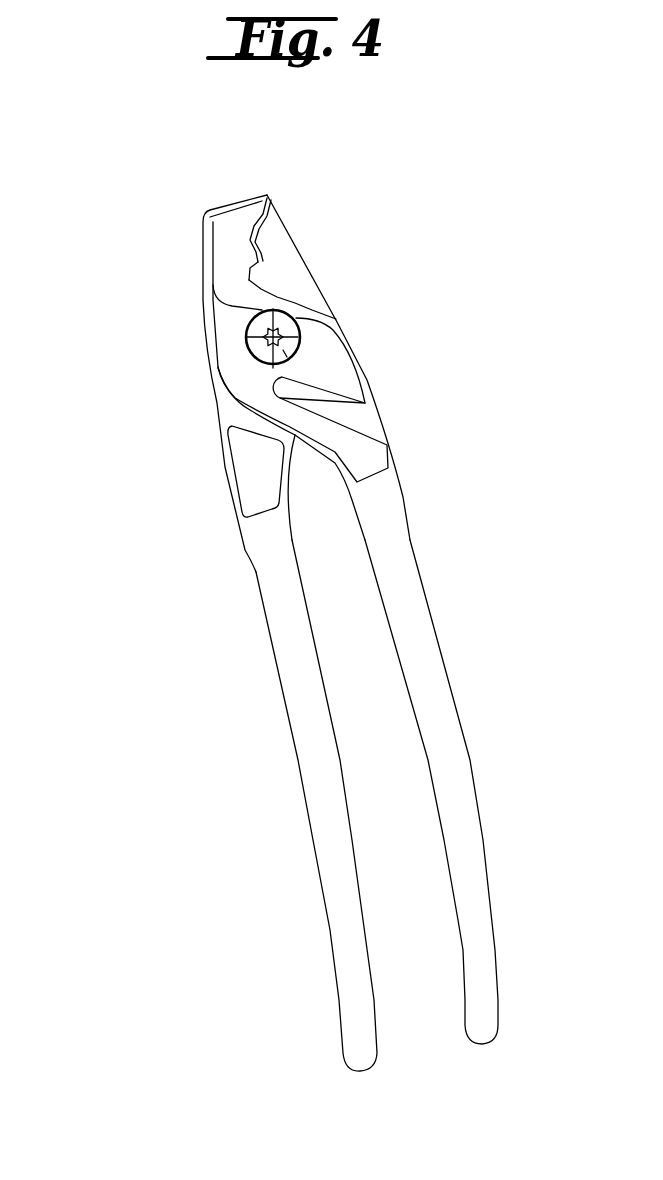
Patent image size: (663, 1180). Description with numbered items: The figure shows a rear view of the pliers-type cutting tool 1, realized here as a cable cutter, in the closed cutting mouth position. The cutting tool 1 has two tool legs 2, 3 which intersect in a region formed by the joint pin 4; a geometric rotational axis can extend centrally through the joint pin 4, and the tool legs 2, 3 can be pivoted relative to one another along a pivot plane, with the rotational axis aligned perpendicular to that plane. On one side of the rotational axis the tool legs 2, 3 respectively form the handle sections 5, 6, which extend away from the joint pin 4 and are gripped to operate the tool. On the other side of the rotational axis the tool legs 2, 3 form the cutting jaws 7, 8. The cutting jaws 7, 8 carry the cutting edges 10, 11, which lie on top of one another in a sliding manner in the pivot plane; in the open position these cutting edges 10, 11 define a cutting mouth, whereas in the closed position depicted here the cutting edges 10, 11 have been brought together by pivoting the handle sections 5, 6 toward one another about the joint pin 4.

The pliers-type cutting tool 1 is at (100, 224).
The tool leg 2 is at (274, 657).
The tool leg 3 is at (426, 564).
The joint pin 4 is at (258, 350).
The handle section 5 is at (352, 910).
The handle section 6 is at (458, 865).
The cutting jaw 7 is at (300, 282).
The cutting jaw 8 is at (227, 338).
The cutting edge 10 is at (278, 232).
The cutting edge 11 is at (236, 263).